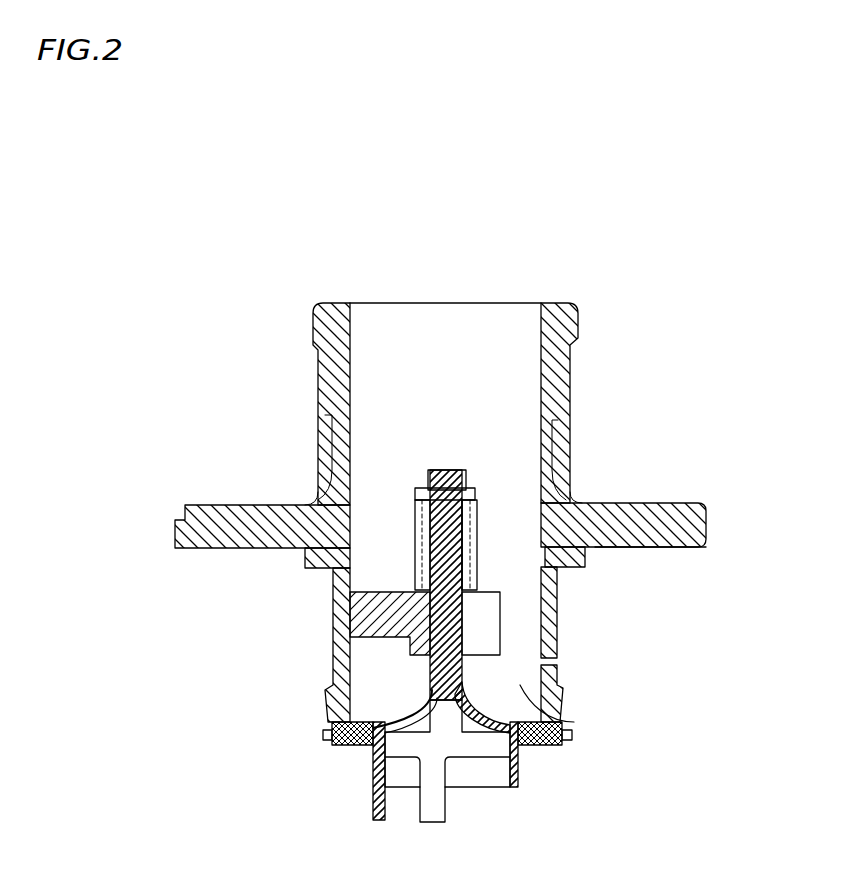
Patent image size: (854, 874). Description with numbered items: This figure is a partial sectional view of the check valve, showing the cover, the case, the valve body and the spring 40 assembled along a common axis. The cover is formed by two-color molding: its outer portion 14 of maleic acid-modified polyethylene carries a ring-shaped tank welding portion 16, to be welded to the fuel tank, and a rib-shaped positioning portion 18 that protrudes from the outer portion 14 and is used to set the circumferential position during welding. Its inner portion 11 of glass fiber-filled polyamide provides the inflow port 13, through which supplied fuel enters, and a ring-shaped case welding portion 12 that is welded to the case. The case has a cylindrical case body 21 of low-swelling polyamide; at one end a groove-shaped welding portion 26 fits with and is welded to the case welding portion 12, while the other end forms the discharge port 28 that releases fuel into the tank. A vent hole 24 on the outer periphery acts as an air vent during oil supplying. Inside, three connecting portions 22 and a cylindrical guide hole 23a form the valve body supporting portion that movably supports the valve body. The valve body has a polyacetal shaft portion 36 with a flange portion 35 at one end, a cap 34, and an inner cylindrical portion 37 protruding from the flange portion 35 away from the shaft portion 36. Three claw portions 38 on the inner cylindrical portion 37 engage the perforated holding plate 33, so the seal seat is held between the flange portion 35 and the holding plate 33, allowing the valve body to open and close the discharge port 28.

The inner portion 11 is at (572, 364).
The case welding portion 12 is at (547, 552).
The inflow port 13 is at (385, 318).
The outer portion 14 is at (668, 503).
The tank welding portion 16 is at (668, 548).
The positioning portion 18 is at (177, 520).
The case body 21 is at (335, 650).
The connecting portions 22 is at (383, 598).
The guide hole 23a is at (470, 625).
The vent hole 24 is at (556, 660).
The welding portion 26 is at (332, 503).
The discharge port 28 is at (560, 722).
The holding plate 33 is at (350, 745).
The cap 34 is at (436, 470).
The flange portion 35 is at (412, 708).
The shaft portion 36 is at (455, 552).
The inner cylindrical portion 37 is at (505, 748).
The claw portions 38 is at (380, 818).
The spring 40 is at (420, 526).